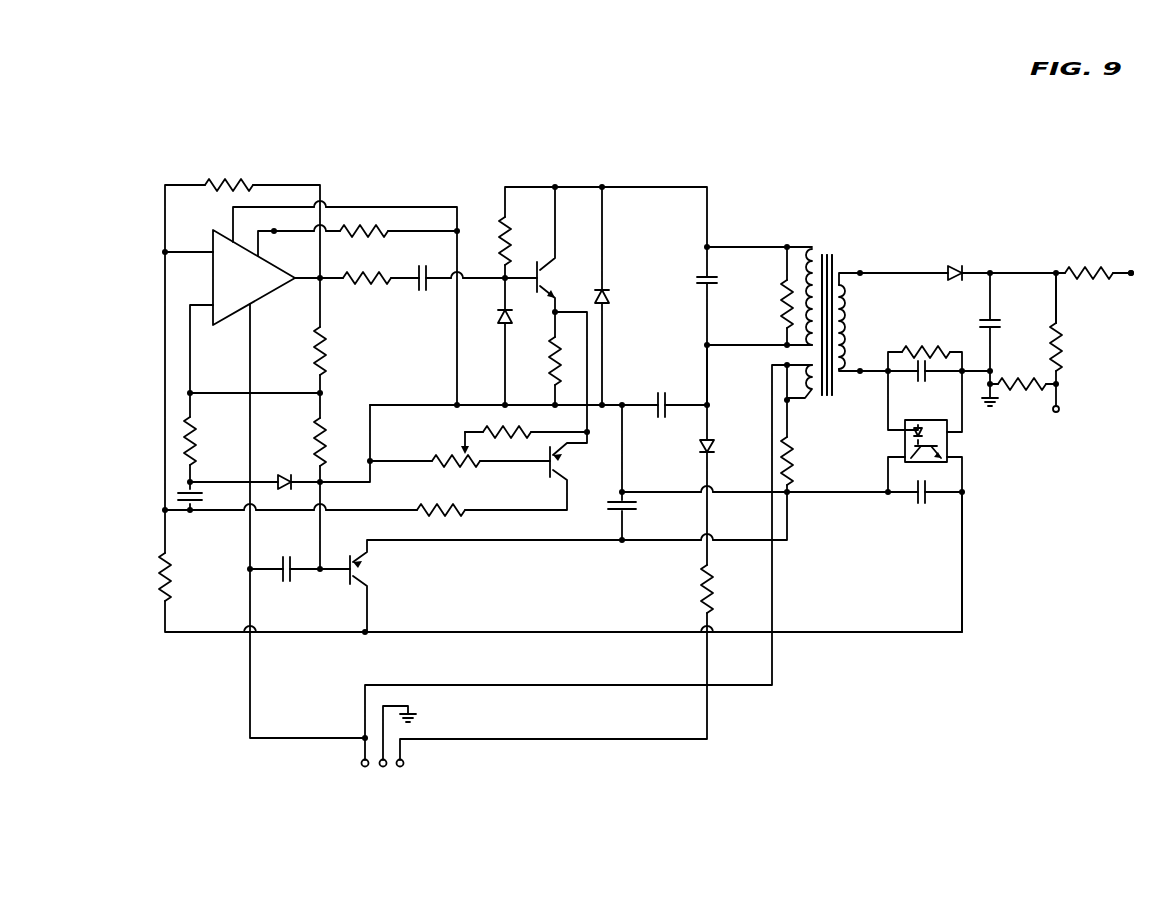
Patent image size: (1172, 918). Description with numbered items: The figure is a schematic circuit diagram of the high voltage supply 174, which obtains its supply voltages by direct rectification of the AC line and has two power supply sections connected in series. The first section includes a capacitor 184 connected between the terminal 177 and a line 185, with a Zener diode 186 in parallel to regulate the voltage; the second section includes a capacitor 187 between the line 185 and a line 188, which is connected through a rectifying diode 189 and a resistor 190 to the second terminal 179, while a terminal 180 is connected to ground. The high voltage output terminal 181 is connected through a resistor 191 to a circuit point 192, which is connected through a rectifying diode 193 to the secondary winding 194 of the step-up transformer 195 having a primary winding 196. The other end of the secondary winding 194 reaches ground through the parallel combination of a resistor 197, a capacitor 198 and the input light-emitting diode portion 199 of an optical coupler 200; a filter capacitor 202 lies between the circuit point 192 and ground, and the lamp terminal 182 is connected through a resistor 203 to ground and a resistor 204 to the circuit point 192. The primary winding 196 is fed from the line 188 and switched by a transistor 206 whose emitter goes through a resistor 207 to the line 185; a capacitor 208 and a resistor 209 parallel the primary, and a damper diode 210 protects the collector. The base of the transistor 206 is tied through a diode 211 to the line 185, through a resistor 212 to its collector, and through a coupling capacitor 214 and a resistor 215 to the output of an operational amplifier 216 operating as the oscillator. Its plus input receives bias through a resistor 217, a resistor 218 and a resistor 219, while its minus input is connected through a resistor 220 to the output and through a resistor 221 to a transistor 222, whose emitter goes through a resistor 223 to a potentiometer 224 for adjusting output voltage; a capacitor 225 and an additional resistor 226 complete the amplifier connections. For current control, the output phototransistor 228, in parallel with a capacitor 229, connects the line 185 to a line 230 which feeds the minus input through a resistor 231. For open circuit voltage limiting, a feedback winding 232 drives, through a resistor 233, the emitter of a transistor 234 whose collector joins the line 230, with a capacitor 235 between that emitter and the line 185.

The high voltage supply 174 is at (893, 190).
The terminal 177 is at (360, 763).
The second terminal 179 is at (405, 763).
The terminal 180 is at (384, 767).
The terminal 181 is at (1131, 272).
The terminal 182 is at (1062, 408).
The capacitor 184 is at (292, 575).
The line 185 is at (421, 405).
The Zener diode 186 is at (293, 478).
The capacitor 187 is at (660, 417).
The line 188 is at (705, 366).
The rectifying diode 189 is at (715, 453).
The resistor 190 is at (700, 595).
The resistor 191 is at (1090, 276).
The circuit point 192 is at (1057, 272).
The rectifying diode 193 is at (960, 272).
The secondary winding 194 is at (842, 305).
The high voltage step-up transformer 195 is at (837, 251).
The primary winding 196 is at (808, 255).
The resistor 197 is at (930, 350).
The capacitor 198 is at (915, 380).
The input light-emitting diode portion 199 is at (918, 427).
The optical coupler 200 is at (947, 438).
The filter capacitor 202 is at (996, 319).
The resistor 203 is at (1023, 386).
The resistor 204 is at (1058, 343).
The transistor 206 is at (546, 270).
The resistor 207 is at (550, 368).
The capacitor 208 is at (698, 276).
The resistor 209 is at (780, 307).
The damper diode 210 is at (608, 302).
The diode 211 is at (502, 324).
The resistor 212 is at (502, 236).
The coupling capacitor 214 is at (426, 288).
The resistor 215 is at (362, 288).
The operational amplifier 216 is at (257, 300).
The resistor 217 is at (202, 422).
The resistor 218 is at (325, 352).
The resistor 219 is at (315, 423).
The resistor 220 is at (252, 183).
The resistor 221 is at (443, 513).
The transistor 222 is at (570, 470).
The resistor 223 is at (490, 420).
The potentiometer 224 is at (455, 468).
The capacitor 225 is at (190, 515).
The resistor 226 is at (355, 237).
The output phototransistor 228 is at (923, 450).
The capacitor 229 is at (927, 507).
The line 230 is at (960, 557).
The resistor 231 is at (170, 572).
The feedback winding 232 is at (807, 395).
The resistor 233 is at (790, 463).
The transistor 234 is at (370, 575).
The capacitor 235 is at (632, 510).